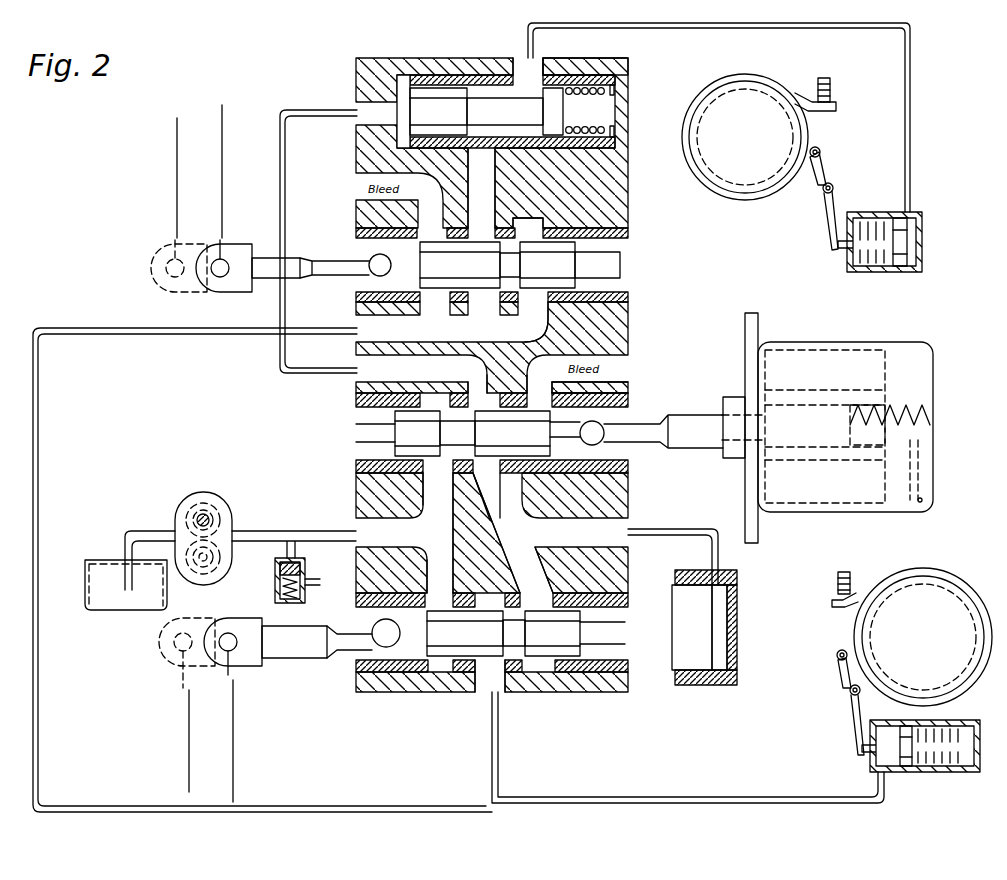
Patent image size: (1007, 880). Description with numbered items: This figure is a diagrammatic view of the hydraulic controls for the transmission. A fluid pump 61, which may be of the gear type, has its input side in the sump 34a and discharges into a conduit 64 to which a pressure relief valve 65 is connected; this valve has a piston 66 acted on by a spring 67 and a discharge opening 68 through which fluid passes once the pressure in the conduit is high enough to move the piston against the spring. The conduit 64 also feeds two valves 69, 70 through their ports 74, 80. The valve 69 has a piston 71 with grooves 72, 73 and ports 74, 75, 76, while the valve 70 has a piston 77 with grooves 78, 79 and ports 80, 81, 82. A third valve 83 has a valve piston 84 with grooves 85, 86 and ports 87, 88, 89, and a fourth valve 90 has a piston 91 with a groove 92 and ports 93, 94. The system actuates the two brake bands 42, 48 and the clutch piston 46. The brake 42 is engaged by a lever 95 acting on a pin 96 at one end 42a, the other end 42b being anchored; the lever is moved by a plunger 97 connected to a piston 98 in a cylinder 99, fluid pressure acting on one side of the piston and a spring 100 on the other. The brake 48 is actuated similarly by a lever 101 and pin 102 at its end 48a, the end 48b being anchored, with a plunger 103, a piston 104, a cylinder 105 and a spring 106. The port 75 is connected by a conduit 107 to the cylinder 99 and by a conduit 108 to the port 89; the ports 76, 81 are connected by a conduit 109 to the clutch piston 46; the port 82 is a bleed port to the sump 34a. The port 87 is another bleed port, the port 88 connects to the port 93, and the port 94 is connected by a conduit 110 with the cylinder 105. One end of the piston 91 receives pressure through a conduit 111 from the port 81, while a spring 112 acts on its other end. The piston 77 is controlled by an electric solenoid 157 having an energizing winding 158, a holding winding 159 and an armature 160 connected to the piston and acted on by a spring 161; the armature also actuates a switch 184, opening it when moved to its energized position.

The sump 34a is at (112, 612).
The brake band 42 is at (894, 622).
The end of brake 42a is at (836, 652).
The end of brake 42b is at (851, 590).
The clutch piston 46 is at (707, 672).
The shift brake 48 is at (776, 120).
The end of brake 48a is at (822, 150).
The end of brake 48b is at (815, 97).
The fluid pump 61 is at (224, 490).
The conduit 64 is at (324, 530).
The pressure relief valve 65 is at (290, 582).
The piston 66 is at (300, 569).
The spring 67 is at (280, 591).
The discharge opening 68 is at (316, 586).
The valve 69 is at (408, 637).
The valve 70 is at (534, 456).
The piston 71 is at (628, 613).
The groove 72 is at (566, 656).
The groove 73 is at (450, 656).
The port 74 is at (441, 598).
The port 75 is at (497, 684).
The port 76 is at (536, 594).
The piston 77 is at (628, 410).
The groove 78 is at (481, 395).
The groove 79 is at (412, 417).
The port 80 is at (437, 473).
The port 81 is at (488, 473).
The bleed port 82 is at (543, 395).
The valve 83 is at (424, 223).
The valve piston 84 is at (628, 245).
The groove 85 is at (456, 305).
The groove 86 is at (628, 312).
The bleed port 87 is at (430, 300).
The port 88 is at (489, 305).
The port 89 is at (541, 305).
The fourth valve 90 is at (534, 93).
The piston 91 is at (600, 106).
The groove 92 is at (442, 104).
The port 93 is at (483, 150).
The port 94 is at (539, 72).
The lever 95 is at (855, 713).
The pin 96 is at (838, 677).
The plunger 97 is at (862, 750).
The piston 98 is at (905, 768).
The cylinder 99 is at (931, 744).
The spring 100 is at (945, 768).
The lever 101 is at (830, 228).
The pin 102 is at (824, 171).
The plunger 103 is at (840, 251).
The piston 104 is at (905, 270).
The cylinder 105 is at (884, 242).
The spring 106 is at (896, 268).
The conduit 107 is at (745, 797).
The conduit 108 is at (40, 456).
The conduit 109 is at (668, 524).
The conduit 110 is at (730, 25).
The conduit 111 is at (286, 171).
The spring 112 is at (598, 72).
The electric solenoid 157 is at (857, 428).
The energizing winding 158 is at (862, 350).
The holding winding 159 is at (884, 396).
The armature 160 is at (746, 466).
The spring 161 is at (934, 413).
The switch 184 is at (922, 460).